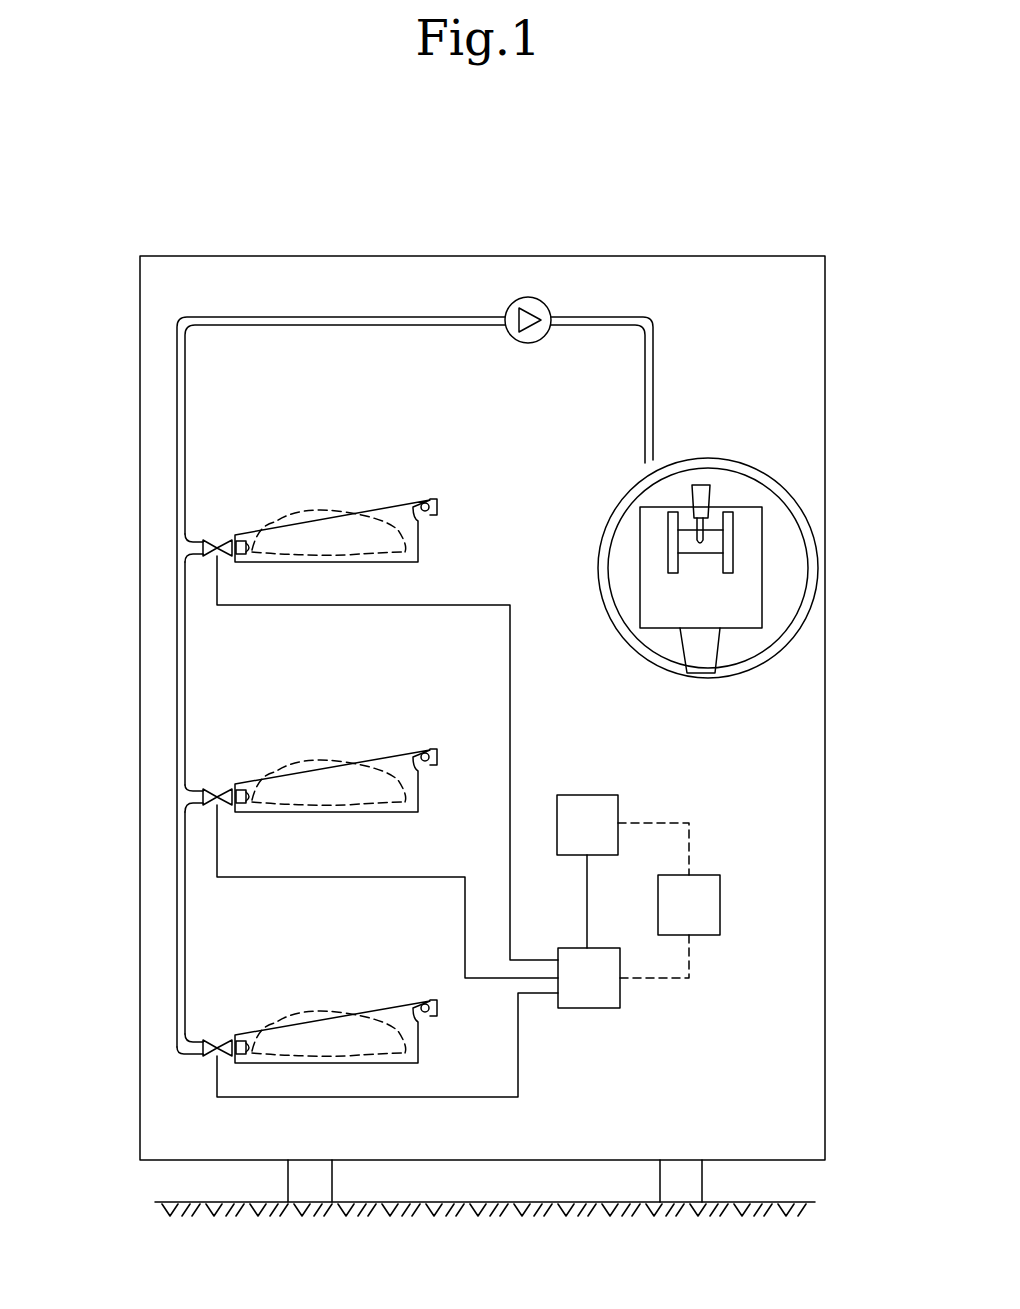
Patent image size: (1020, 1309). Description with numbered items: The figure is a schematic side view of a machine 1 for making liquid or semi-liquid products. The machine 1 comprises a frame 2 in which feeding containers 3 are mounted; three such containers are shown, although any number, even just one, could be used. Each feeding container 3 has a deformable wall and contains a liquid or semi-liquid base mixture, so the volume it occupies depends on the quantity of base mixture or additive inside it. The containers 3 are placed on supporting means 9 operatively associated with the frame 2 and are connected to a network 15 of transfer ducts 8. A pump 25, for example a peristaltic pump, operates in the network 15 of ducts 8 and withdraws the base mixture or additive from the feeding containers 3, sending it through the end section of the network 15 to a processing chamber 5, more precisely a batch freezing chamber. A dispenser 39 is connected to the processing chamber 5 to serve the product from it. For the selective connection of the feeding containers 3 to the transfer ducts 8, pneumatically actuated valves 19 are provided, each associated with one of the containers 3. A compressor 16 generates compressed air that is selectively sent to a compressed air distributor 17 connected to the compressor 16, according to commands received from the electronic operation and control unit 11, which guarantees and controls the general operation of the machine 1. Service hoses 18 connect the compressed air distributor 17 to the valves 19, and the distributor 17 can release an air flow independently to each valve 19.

The machine 1 is at (690, 231).
The frame 2 is at (327, 250).
The feeding container 3 is at (332, 506).
The processing chamber 5 is at (583, 530).
The transfer duct 8 is at (229, 311).
The supporting means 9 is at (430, 537).
The operation and control unit 11 is at (702, 918).
The network of transfer ducts 15 is at (404, 310).
The compressor 16 is at (600, 837).
The compressed air distributor 17 is at (601, 991).
The service hose 18 is at (522, 946).
The pneumatically actuated valve 19 is at (208, 563).
The pump 25 is at (528, 292).
The dispenser 39 is at (695, 611).